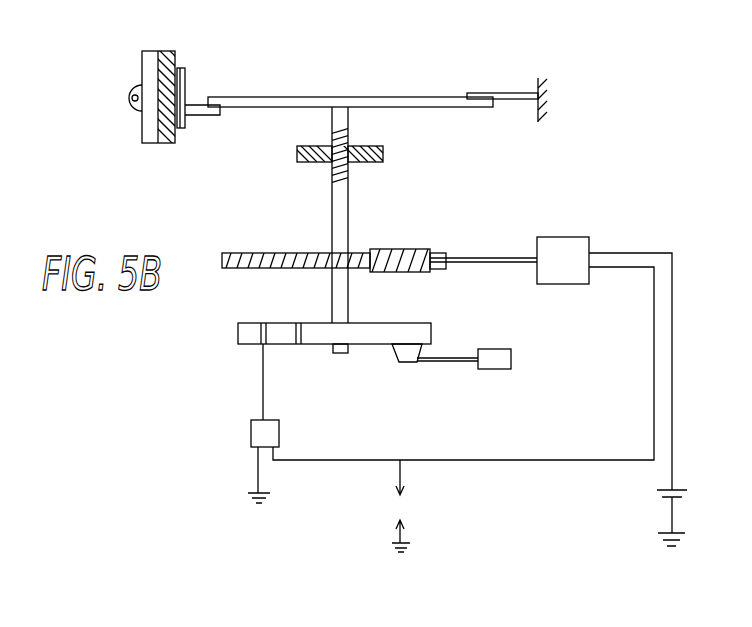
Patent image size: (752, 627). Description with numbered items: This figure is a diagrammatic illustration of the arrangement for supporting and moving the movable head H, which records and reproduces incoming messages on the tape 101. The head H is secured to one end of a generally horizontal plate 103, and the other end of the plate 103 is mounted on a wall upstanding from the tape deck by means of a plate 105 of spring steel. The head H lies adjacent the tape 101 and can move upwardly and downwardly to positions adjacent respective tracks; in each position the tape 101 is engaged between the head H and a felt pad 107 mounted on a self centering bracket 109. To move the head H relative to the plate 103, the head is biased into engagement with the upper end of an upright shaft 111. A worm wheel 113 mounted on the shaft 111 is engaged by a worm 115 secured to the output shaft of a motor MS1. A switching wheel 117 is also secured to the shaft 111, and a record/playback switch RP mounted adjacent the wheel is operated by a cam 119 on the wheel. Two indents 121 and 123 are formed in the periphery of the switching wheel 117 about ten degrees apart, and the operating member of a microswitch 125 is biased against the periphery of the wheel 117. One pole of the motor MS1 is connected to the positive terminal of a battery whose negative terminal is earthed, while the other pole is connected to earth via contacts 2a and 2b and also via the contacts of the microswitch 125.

The tape 101 is at (185, 74).
The plate 103 is at (379, 80).
The plate of spring steel 105 is at (509, 93).
The felt pad 107 is at (167, 52).
The self centering bracket 109 is at (145, 62).
The upright shaft 111 is at (348, 173).
The worm wheel 113 is at (286, 253).
The worm 115 is at (410, 249).
The switching wheel 117 is at (394, 323).
The cam 119 is at (407, 362).
The indent 121 is at (263, 323).
The indent 123 is at (298, 323).
The microswitch 125 is at (251, 433).
The movable head H is at (206, 118).
The record/playback switch RP is at (491, 349).
The motor MS1 is at (560, 237).
The contacts 2a is at (420, 479).
The contacts 2b is at (417, 528).